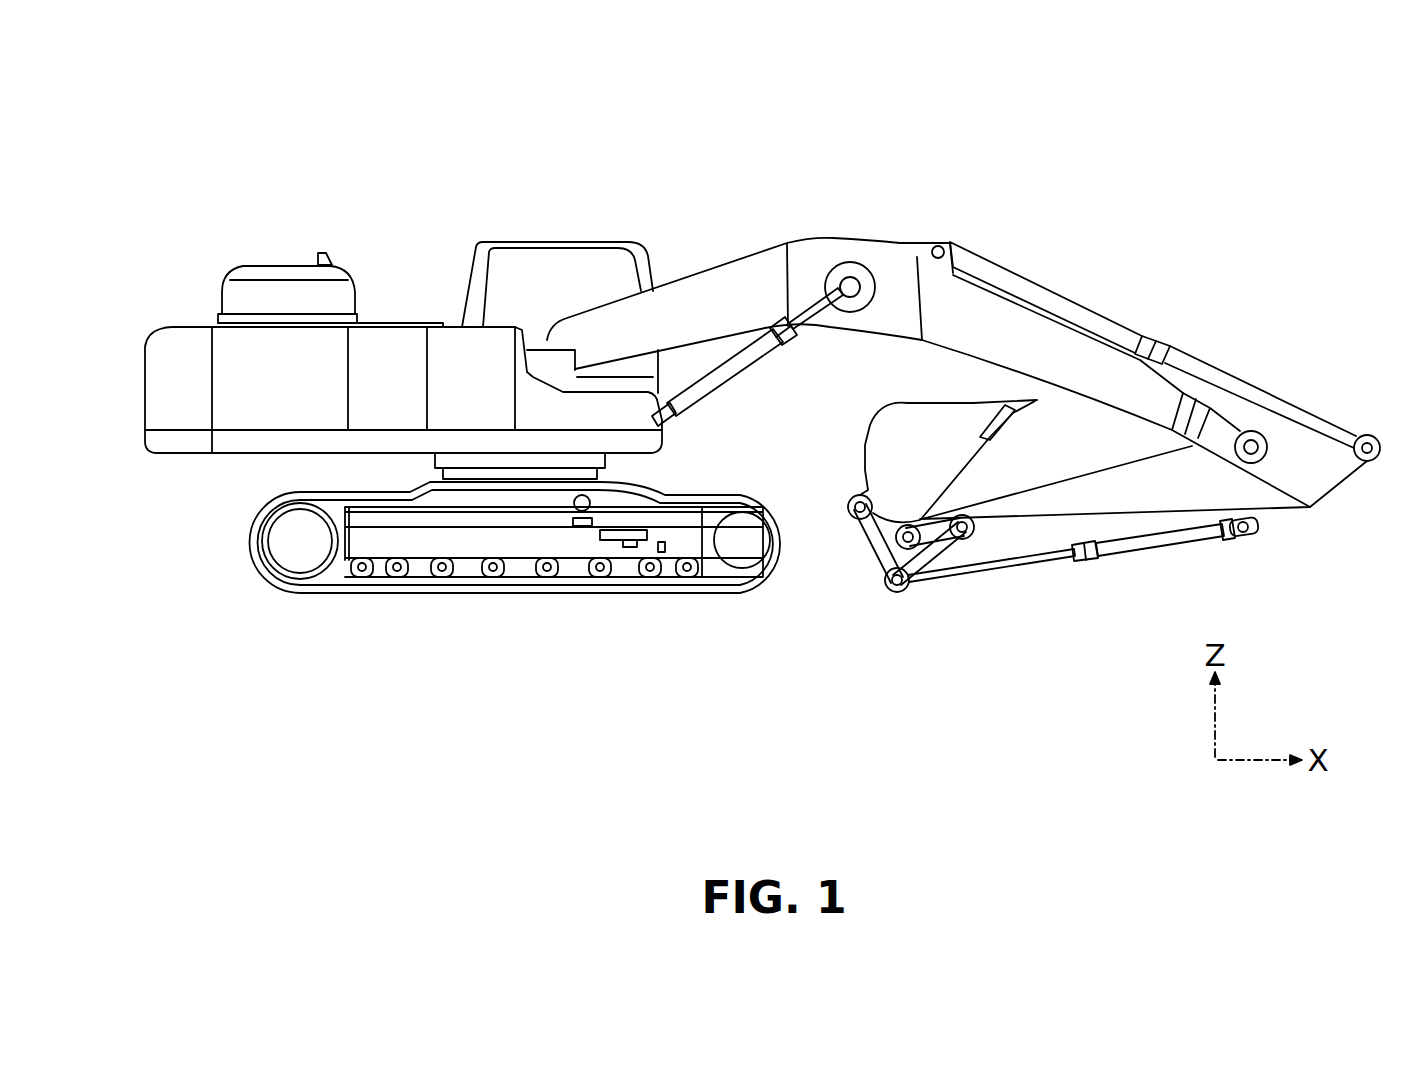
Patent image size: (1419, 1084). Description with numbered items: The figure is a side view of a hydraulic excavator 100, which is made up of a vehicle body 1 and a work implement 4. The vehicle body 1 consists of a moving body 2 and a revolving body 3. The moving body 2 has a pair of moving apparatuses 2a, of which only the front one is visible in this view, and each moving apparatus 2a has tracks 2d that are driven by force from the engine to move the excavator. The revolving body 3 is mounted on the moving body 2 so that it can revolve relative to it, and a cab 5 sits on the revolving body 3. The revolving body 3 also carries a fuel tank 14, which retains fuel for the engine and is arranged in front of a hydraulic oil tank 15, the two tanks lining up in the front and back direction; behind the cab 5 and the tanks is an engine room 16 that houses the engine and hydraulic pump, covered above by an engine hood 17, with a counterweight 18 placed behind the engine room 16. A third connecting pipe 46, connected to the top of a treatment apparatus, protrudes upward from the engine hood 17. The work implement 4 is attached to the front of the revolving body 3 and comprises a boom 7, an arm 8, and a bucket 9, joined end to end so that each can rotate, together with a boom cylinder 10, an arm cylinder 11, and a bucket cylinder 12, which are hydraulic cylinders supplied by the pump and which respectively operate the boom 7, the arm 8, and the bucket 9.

The vehicle body 1 is at (750, 363).
The hydraulic excavator 100 is at (750, 363).
The moving body 2 is at (474, 536).
The moving apparatus 2a is at (296, 545).
The track 2d is at (740, 490).
The revolving body 3 is at (394, 277).
The work implement 4 is at (963, 402).
The cab 5 is at (618, 240).
The boom 7 is at (750, 270).
The arm 8 is at (1212, 490).
The bucket 9 is at (890, 437).
The boom cylinder 10 is at (768, 354).
The arm cylinder 11 is at (1052, 300).
The bucket cylinder 12 is at (1115, 555).
The fuel tank 14 is at (467, 360).
The hydraulic oil tank 15 is at (388, 350).
The engine room 16 is at (248, 280).
The engine hood 17 is at (278, 340).
The counterweight 18 is at (185, 363).
The third connecting pipe 46 is at (318, 250).